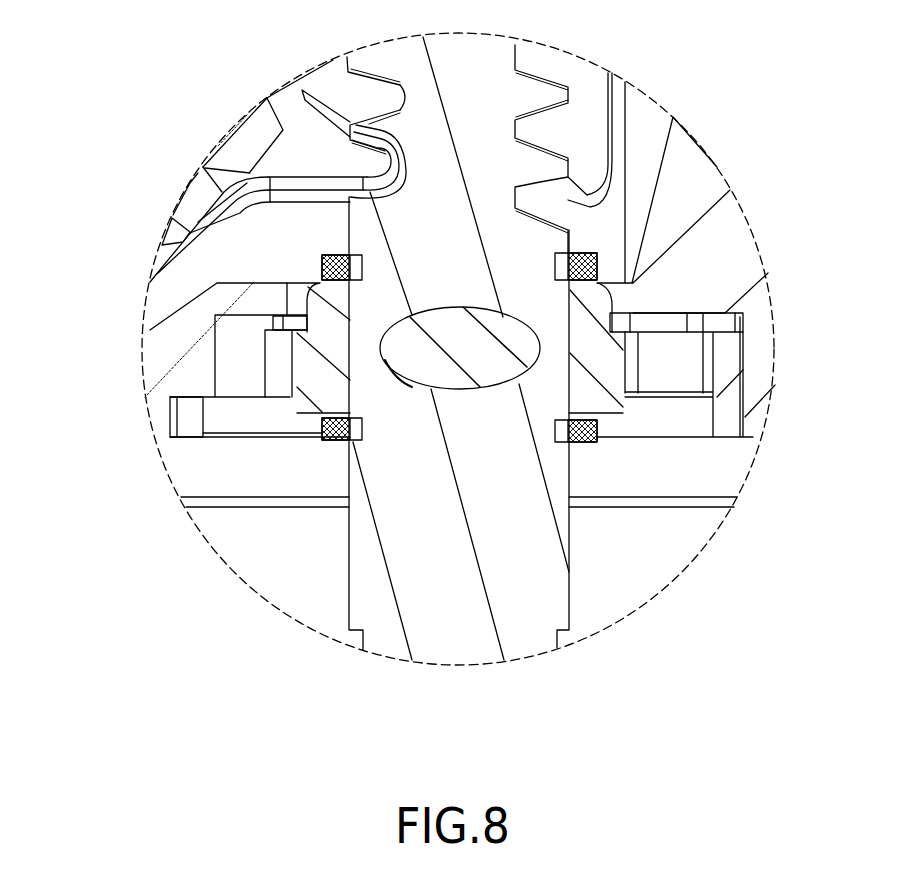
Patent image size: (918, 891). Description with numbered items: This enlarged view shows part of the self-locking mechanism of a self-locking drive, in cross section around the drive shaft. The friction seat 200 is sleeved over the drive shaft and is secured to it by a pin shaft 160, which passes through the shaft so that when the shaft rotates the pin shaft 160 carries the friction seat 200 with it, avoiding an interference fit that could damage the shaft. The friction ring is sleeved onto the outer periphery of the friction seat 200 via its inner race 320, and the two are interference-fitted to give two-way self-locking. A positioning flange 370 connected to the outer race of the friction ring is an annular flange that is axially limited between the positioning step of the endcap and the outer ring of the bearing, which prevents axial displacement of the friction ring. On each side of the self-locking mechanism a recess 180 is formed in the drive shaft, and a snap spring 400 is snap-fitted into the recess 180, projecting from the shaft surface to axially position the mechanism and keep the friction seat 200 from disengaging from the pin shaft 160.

The pin shaft 160 is at (423, 374).
The recess 180 is at (568, 443).
The friction seat 200 is at (317, 388).
The inner race 320 is at (272, 370).
The positioning flange 370 is at (180, 416).
The snap spring 400 is at (597, 440).